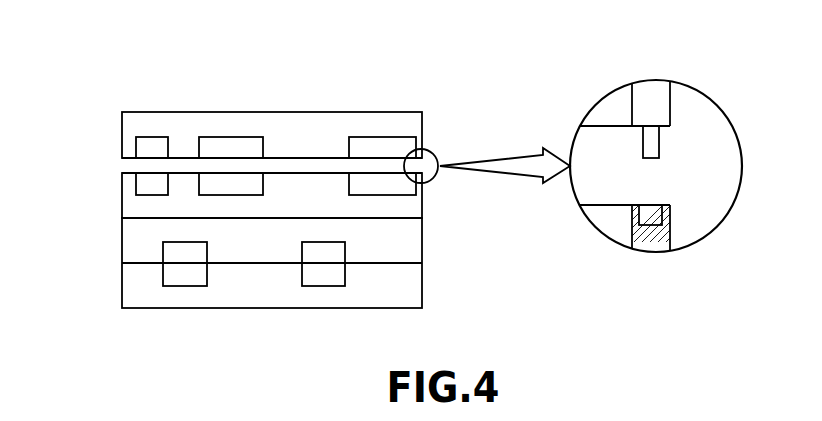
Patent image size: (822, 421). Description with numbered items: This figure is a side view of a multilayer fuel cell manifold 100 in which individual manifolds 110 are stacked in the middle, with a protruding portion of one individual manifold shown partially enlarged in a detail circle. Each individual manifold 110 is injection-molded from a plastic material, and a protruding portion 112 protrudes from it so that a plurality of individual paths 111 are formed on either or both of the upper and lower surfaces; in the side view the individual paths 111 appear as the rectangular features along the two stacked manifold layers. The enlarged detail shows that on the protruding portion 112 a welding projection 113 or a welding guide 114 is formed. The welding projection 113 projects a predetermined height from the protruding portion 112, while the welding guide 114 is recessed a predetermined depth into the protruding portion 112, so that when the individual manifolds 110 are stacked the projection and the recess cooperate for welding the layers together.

The display device 100 is at (130, 54).
The individual manifold 110 is at (118, 139).
The individual paths 111 is at (367, 184).
The protruding portion 112 is at (650, 103).
The welding projection 113 is at (654, 142).
The welding guide 114 is at (660, 215).